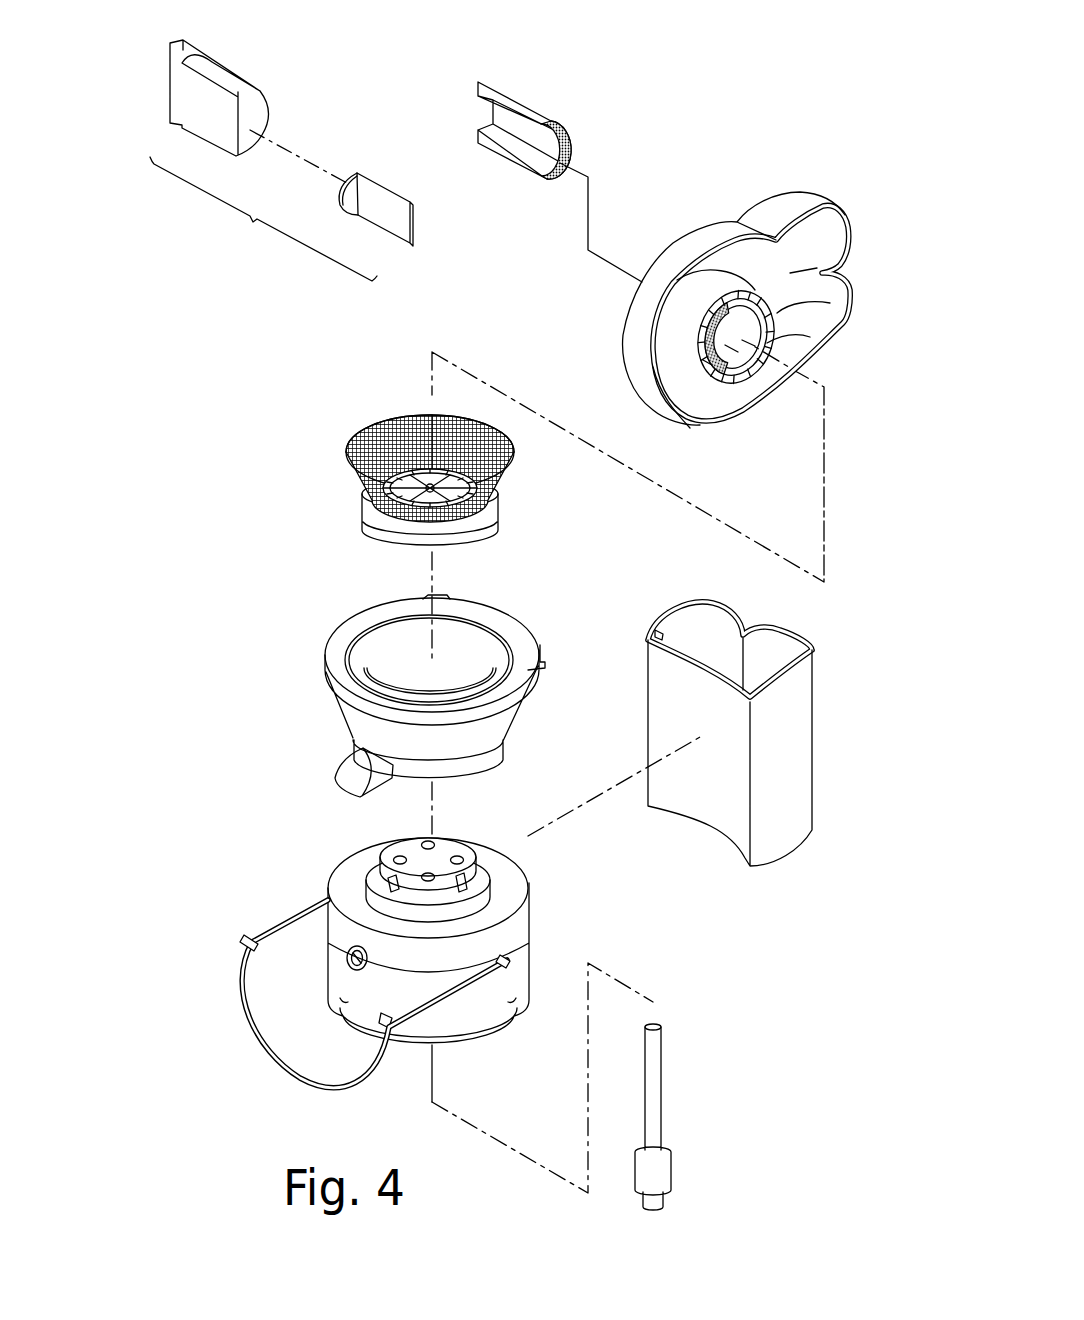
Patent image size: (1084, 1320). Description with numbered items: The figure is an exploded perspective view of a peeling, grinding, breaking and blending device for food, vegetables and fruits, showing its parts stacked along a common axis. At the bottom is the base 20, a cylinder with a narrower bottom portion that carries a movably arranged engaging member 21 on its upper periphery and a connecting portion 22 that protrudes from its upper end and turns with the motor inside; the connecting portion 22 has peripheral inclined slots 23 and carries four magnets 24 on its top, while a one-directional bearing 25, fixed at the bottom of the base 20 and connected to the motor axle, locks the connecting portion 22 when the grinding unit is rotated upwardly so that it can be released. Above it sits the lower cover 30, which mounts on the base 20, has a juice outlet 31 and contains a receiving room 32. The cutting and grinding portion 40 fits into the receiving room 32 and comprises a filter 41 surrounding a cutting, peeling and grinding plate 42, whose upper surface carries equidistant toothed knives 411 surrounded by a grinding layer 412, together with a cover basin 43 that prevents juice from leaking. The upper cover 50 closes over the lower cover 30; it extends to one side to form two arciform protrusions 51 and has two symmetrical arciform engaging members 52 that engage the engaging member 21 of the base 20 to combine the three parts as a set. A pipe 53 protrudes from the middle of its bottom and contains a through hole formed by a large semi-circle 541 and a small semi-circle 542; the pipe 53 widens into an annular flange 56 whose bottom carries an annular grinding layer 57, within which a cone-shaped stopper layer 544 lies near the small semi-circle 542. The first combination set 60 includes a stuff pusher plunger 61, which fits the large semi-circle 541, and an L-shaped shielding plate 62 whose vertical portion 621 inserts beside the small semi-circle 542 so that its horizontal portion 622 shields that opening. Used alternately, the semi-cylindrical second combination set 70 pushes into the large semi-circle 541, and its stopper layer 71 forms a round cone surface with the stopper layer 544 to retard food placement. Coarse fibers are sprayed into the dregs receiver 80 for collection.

The base 20 is at (480, 996).
The engaging member 21 is at (265, 1036).
The connecting portion 22 is at (500, 861).
The inclined slots 23 is at (378, 870).
The magnet 24 is at (460, 857).
The one-directional bearing 25 is at (672, 1172).
The lower cover 30 is at (402, 691).
The juice outlet 31 is at (330, 786).
The receiving room 32 is at (475, 648).
The cutting and grinding portion 40 is at (429, 454).
The filter 41 is at (393, 441).
The toothed knives 411 is at (410, 413).
The grinding layer 412 is at (352, 442).
The cutting, peeling and grinding plate 42 is at (515, 482).
The cover basin 43 is at (370, 527).
The upper cover 50 is at (715, 279).
The arciform protrusions 51 is at (808, 200).
The arciform engaging members 52 is at (680, 257).
The pipe 53 is at (680, 332).
The large semi-circle 541 is at (753, 332).
The small semi-circle 542 is at (748, 345).
The stopper layer 544 is at (700, 360).
The annular flange 56 is at (710, 353).
The annular grinding layer 57 is at (733, 350).
The first combination set 60 is at (263, 205).
The stuff pusher plunger 61 is at (228, 78).
The shielding plate 62 is at (395, 197).
The vertical portion 621 is at (410, 222).
The horizontal portion 622 is at (355, 185).
The second combination set 70 is at (539, 156).
The stopper layer 71 is at (548, 152).
The dregs receiver 80 is at (785, 864).